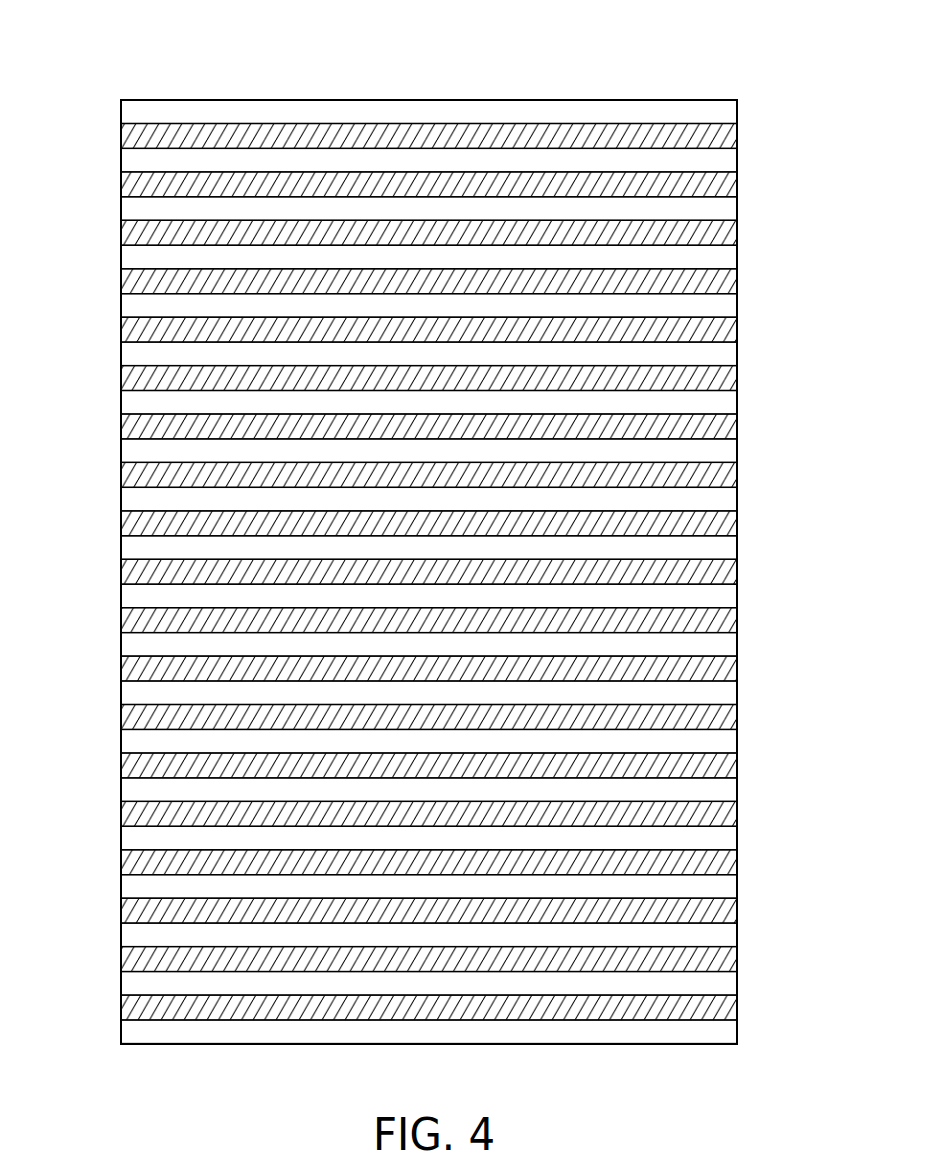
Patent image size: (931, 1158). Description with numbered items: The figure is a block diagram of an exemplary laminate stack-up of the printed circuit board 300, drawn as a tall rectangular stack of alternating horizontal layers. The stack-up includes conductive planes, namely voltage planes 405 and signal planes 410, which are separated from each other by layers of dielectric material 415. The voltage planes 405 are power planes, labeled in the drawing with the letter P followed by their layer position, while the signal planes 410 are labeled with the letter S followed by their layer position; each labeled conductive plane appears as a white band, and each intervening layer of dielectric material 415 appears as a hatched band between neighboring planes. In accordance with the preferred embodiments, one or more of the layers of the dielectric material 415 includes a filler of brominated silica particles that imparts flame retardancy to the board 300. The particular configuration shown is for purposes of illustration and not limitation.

The printed circuit board 300 is at (126, 66).
The voltage planes 405 is at (121, 209).
The signal planes 410 is at (121, 112).
The dielectric material 415 is at (737, 134).